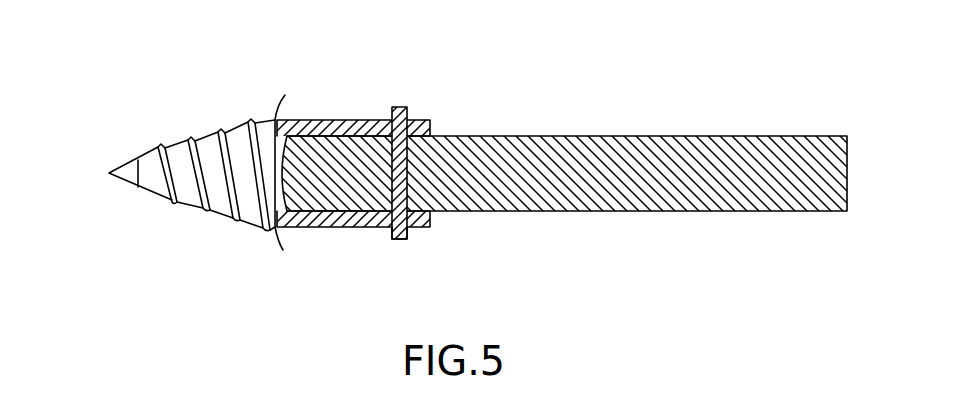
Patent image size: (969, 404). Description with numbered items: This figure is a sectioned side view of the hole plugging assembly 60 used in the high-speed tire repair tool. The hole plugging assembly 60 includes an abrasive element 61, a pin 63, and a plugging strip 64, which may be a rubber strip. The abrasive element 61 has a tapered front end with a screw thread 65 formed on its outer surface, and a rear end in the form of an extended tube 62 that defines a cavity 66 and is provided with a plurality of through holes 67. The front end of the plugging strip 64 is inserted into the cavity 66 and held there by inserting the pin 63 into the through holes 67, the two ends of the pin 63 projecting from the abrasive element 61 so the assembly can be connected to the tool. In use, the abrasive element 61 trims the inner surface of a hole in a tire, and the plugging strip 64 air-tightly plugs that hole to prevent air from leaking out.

The hole plugging assembly 60 is at (92, 123).
The abrasive element 61 is at (206, 147).
The extended tube 62 is at (321, 119).
The pin 63 is at (407, 239).
The plugging strip 64 is at (638, 148).
The screw thread 65 is at (172, 198).
The cavity 66 is at (325, 225).
The through holes 67 is at (408, 120).